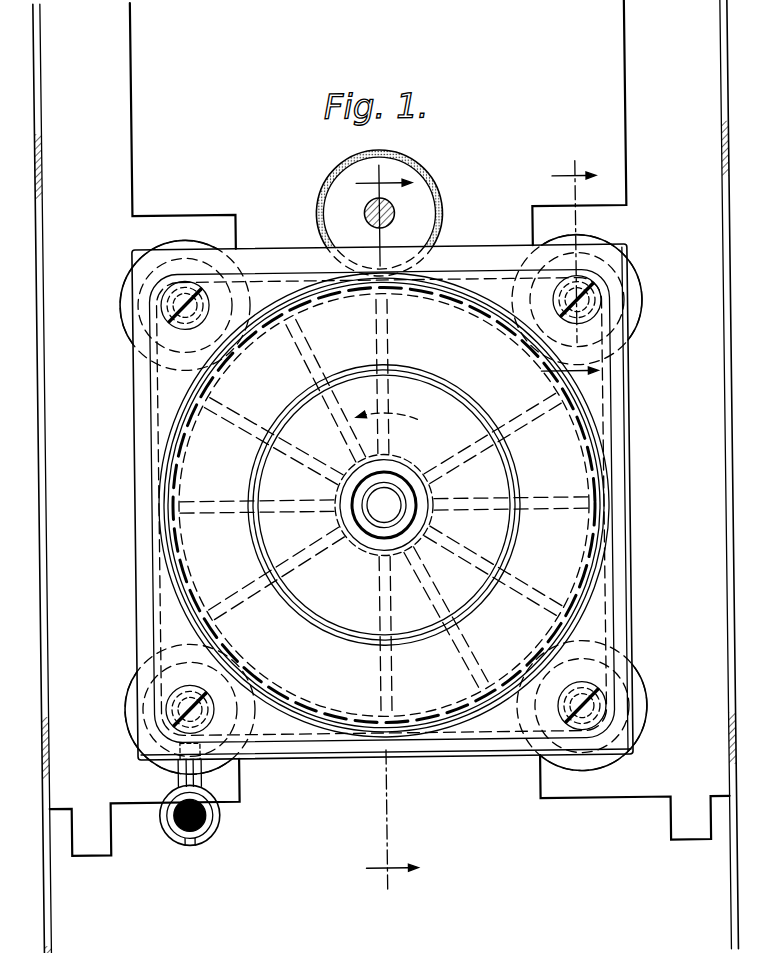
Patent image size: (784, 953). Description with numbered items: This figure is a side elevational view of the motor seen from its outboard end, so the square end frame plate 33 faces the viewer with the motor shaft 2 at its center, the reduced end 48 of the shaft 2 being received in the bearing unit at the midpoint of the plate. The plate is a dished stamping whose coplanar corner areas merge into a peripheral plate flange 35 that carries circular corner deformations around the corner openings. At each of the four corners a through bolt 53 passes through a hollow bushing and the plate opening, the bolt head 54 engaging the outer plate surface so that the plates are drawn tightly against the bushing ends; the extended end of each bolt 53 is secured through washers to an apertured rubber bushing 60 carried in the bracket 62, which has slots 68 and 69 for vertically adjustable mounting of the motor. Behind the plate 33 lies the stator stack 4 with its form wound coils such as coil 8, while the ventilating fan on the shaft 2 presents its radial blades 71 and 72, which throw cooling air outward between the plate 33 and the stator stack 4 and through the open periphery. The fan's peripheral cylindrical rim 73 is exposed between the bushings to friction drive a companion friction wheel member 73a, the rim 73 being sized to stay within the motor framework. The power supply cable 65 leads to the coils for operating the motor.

The motor shaft 2 is at (378, 533).
The stator stack 4 is at (636, 408).
The form wound coil 8 is at (558, 261).
The end frame plate 33 is at (142, 422).
The peripheral plate flange 35 is at (424, 742).
The reduced end of the motor shaft 48 is at (384, 493).
The through bolt 53 is at (213, 275).
The bolt head 54 is at (592, 710).
The rubber bushing 60 is at (130, 292).
The bracket 62 is at (136, 100).
The power supply cable 65 is at (179, 830).
The slot 68 is at (48, 18).
The slot 69 is at (47, 880).
The radial blade 71 is at (379, 583).
The radial blade 72 is at (468, 652).
The peripheral cylindrical rim 73 is at (457, 295).
The friction wheel member 73a is at (421, 187).